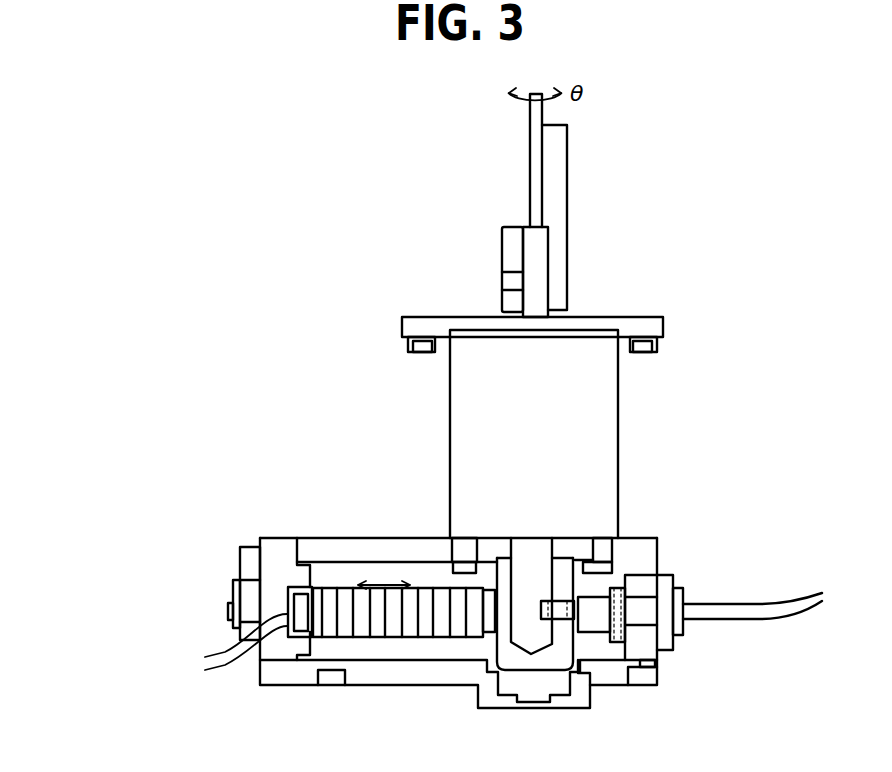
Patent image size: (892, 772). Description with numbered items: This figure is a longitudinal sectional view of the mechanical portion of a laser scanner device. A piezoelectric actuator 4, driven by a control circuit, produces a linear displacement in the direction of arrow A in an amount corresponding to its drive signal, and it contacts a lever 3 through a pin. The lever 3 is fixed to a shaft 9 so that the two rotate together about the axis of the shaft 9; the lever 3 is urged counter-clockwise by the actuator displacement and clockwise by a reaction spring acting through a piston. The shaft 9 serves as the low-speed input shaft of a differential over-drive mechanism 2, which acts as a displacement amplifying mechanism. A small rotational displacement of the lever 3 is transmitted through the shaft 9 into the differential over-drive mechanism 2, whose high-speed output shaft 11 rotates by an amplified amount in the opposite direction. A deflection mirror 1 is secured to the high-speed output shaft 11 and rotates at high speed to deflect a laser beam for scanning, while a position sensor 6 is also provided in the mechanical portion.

The mirror 1 is at (557, 205).
The high-speed output shaft 11 is at (538, 268).
The differential over-drive mechanism 2 is at (608, 419).
The lever 3 is at (563, 589).
The piezoelectric actuator 4 is at (412, 628).
The shaft 9 is at (537, 558).
The position sensor 6 is at (547, 613).